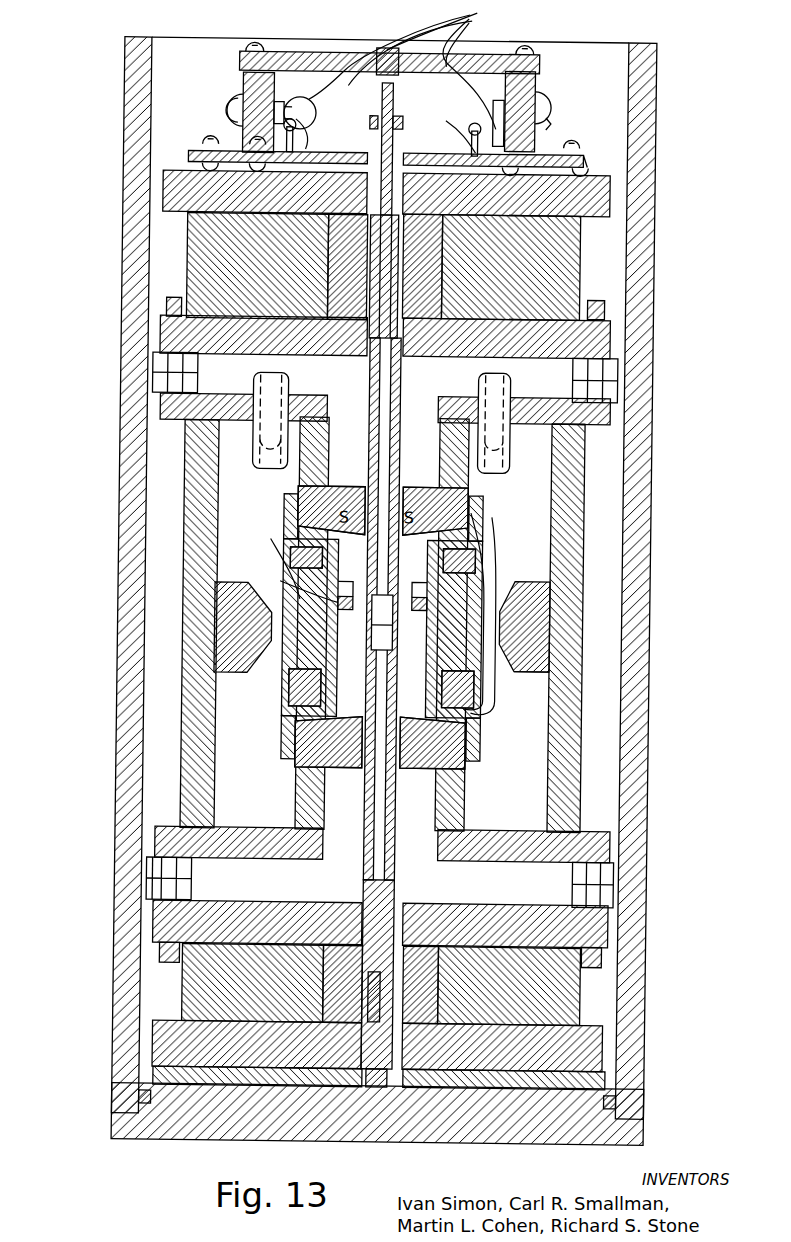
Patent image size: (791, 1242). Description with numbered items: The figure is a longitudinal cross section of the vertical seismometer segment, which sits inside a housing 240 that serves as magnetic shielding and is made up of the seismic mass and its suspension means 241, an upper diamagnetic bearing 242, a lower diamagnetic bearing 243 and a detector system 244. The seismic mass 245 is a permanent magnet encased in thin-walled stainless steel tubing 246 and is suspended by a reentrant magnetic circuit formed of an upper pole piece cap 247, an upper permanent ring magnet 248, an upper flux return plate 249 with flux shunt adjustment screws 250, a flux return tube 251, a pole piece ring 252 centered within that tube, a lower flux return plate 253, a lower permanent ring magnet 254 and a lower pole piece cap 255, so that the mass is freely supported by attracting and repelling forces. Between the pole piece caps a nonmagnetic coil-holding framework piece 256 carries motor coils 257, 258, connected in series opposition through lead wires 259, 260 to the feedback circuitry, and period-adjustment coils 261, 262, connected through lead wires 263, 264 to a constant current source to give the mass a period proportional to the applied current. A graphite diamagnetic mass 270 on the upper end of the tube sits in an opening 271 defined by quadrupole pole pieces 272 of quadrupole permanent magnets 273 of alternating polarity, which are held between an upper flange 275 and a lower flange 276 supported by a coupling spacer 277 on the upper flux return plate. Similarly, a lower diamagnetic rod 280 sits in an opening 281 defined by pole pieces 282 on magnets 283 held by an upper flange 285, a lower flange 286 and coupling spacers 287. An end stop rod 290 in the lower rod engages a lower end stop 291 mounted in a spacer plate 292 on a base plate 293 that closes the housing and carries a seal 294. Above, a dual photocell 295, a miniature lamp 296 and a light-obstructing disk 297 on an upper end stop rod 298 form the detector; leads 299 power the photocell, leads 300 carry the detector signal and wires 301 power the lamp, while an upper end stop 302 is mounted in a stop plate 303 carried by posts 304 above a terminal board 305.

The housing 240 is at (633, 60).
The seismic mass and its suspension means 241 is at (594, 587).
The upper diamagnetic bearing 242 is at (596, 252).
The lower diamagnetic bearing 243 is at (598, 992).
The detector system 244 is at (548, 111).
The seismic mass 245 is at (525, 616).
The stainless steel tubing 246 is at (592, 372).
The upper pole piece cap 247 is at (467, 499).
The upper permanent ring magnet 248 is at (552, 468).
The upper flux return plate 249 is at (577, 407).
The flux shunt adjustment screws 250 is at (258, 387).
The flux return tube 251 is at (566, 680).
The pole piece ring 252 is at (530, 648).
The lower flux return plate 253 is at (570, 845).
The lower permanent ring magnet 254 is at (458, 791).
The lower pole piece cap 255 is at (471, 742).
The coil-holding framework piece 256 is at (303, 655).
The motor coil 257 is at (290, 549).
The motor coil 258 is at (303, 687).
The lead wire 259 is at (468, 132).
The lead wire 260 is at (466, 150).
The period-adjustment coil 261 is at (283, 602).
The period-adjustment coil 262 is at (338, 604).
The lead wire 263 is at (300, 140).
The lead wire 264 is at (300, 150).
The diamagnetic mass 270 is at (380, 283).
The opening 271 is at (590, 180).
The quadrupole pole pieces 272 is at (428, 262).
The quadrupole permanent magnets 273 is at (221, 262).
The upper flange 275 is at (598, 205).
The lower flange 276 is at (606, 327).
The coupling spacer 277 is at (596, 349).
The diamagnetic rod 280 is at (594, 882).
The opening 281 is at (180, 889).
The pole pieces 282 is at (565, 967).
The magnets 283 is at (220, 987).
The upper flange 285 is at (189, 929).
The lower flange 286 is at (148, 1100).
The coupling spacers 287 is at (168, 873).
The end stop rod 290 is at (175, 1040).
The lower end stop 291 is at (175, 1078).
The spacer plate 292 is at (591, 1077).
The base plate 293 is at (180, 1125).
The seal 294 is at (622, 1100).
The dual photocell 295 is at (534, 98).
The miniature lamp 296 is at (304, 112).
The light-obstructing disk 297 is at (393, 118).
The end stop rod 298 is at (374, 96).
The leads 299 is at (544, 123).
The leads 300 is at (490, 79).
The wires 301 is at (262, 111).
The upper end stop 302 is at (379, 50).
The stop plate 303 is at (233, 58).
The posts 304 is at (239, 132).
The terminal board 305 is at (190, 160).